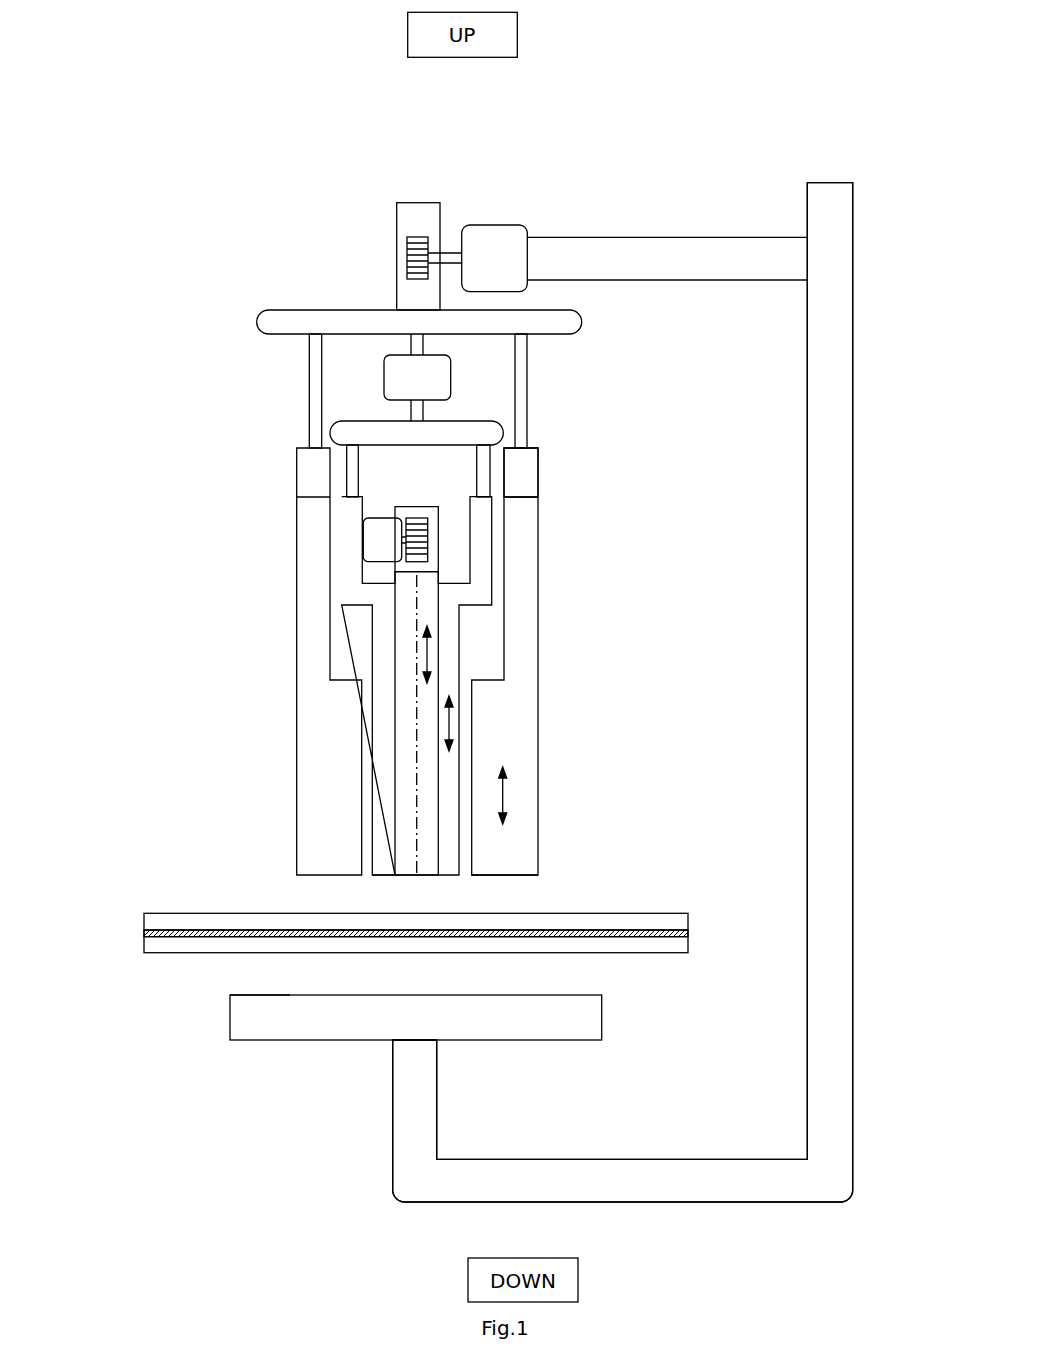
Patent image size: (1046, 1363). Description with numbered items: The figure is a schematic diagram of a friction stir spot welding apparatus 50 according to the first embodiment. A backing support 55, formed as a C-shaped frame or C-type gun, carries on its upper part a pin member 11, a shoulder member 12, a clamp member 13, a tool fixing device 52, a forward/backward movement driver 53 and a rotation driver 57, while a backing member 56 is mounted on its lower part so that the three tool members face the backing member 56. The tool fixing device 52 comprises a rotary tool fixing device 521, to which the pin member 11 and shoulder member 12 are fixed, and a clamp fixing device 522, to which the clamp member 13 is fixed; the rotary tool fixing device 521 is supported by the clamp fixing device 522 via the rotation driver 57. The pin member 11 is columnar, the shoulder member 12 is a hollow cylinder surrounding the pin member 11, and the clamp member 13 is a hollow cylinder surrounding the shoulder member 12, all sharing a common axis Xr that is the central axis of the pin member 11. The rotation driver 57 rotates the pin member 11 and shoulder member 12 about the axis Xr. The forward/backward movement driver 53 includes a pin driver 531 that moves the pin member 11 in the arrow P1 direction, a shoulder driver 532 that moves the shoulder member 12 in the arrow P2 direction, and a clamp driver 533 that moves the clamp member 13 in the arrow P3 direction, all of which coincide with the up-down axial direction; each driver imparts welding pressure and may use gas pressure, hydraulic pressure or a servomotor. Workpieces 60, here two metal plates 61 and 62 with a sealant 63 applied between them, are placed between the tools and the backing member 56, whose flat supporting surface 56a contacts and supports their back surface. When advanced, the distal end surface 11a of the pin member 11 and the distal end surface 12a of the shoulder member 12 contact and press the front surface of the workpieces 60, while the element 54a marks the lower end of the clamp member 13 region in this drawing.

The friction stir spot welding apparatus 50 is at (713, 96).
The tool fixing device 52 is at (346, 378).
The rotary tool fixing device 521 is at (336, 434).
The clamp fixing device 522 is at (263, 322).
The forward/backward movement driver 53 is at (622, 150).
The pin driver 531 is at (383, 522).
The shoulder driver 532 is at (494, 238).
The clamp driver 533 is at (521, 473).
The backing support 55 is at (808, 549).
The rotation driver 57 is at (418, 378).
The clamp member 13 is at (308, 538).
The shoulder member 12 is at (383, 693).
The pin member 11 is at (405, 737).
The axis Xr is at (416, 804).
The arrow P1 direction P1 is at (431, 652).
The arrow P2 direction P2 is at (452, 727).
The arrow P3 direction P3 is at (506, 795).
The workpieces 60 is at (418, 877).
The metal plate 61 is at (156, 918).
The metal plate 62 is at (692, 945).
The sealant 63 is at (692, 932).
The backing member 56 is at (603, 1020).
The supporting surface 56a is at (253, 988).
The distal end surface 12a is at (378, 878).
The distal end surface 11a is at (430, 878).
The lower end of outer cylinder 54a is at (500, 878).